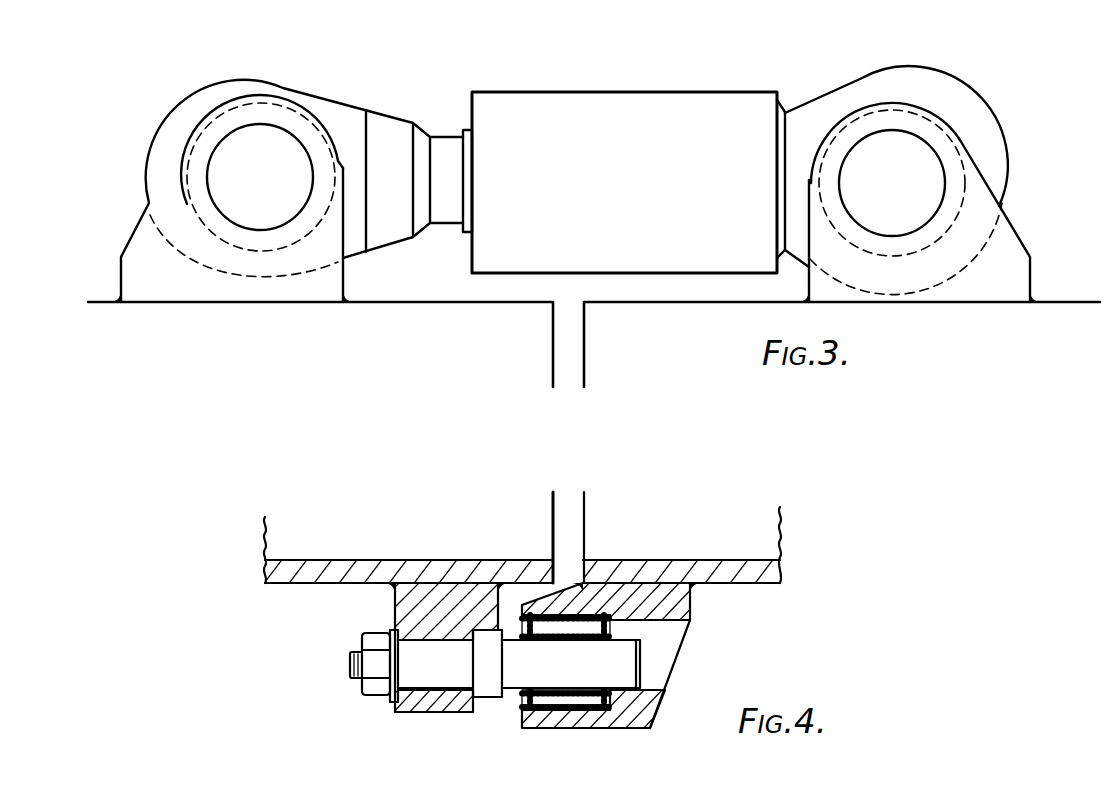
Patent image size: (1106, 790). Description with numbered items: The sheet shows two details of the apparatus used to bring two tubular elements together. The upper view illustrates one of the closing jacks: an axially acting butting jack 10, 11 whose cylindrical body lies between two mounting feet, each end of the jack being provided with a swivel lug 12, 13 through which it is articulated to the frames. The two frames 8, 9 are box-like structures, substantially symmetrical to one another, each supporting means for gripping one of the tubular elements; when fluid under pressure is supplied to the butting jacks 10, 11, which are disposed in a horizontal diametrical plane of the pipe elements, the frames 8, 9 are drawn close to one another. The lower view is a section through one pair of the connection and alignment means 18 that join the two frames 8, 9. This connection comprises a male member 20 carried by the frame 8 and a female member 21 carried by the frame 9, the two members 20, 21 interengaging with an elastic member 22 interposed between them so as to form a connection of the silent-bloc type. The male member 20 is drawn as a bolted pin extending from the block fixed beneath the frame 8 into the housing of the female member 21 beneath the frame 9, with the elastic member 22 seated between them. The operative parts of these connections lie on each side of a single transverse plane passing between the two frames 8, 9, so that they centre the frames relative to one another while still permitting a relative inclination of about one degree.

In FIG. 3, the frame 8 is at (508, 313).
In FIG. 4, the frame 8 is at (465, 568).
In FIG. 3, the frame 9 is at (628, 318).
In FIG. 4, the frame 9 is at (690, 568).
In FIG. 3, the butting jack 10 is at (628, 163).
In FIG. 3, the butting jack 11 is at (693, 122).
In FIG. 3, the swivel lug 12 is at (306, 109).
In FIG. 3, the swivel lug 13 is at (953, 113).
In FIG. 4, the connection and alignment means 18 is at (513, 700).
In FIG. 4, the male member 20 is at (487, 680).
In FIG. 4, the female member 21 is at (620, 728).
In FIG. 4, the elastic member 22 is at (592, 700).